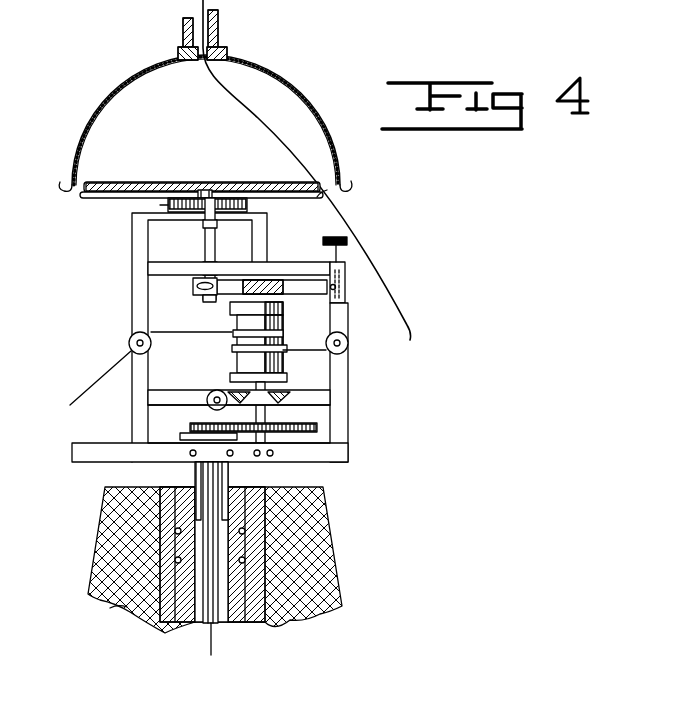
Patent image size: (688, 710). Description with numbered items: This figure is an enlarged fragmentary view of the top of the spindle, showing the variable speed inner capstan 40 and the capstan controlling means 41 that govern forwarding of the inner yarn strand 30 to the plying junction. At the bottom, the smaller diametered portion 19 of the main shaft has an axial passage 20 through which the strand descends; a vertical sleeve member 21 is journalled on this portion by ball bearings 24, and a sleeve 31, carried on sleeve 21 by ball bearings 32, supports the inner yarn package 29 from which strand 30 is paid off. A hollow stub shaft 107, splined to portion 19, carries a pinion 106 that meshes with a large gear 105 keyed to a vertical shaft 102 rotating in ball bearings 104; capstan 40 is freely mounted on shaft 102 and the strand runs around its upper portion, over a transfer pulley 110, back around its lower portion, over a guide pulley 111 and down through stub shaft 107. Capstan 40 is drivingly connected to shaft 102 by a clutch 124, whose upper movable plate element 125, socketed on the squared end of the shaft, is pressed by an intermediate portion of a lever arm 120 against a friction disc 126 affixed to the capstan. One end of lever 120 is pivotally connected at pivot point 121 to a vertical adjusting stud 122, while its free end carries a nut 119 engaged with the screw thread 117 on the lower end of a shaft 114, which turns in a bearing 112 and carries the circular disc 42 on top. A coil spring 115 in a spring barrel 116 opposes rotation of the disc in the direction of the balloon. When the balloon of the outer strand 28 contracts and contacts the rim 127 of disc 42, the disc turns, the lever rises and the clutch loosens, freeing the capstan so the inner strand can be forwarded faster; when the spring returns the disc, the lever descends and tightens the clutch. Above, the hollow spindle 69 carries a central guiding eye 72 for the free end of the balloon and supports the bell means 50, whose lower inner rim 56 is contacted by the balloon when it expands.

The hollow spindle 69 is at (218, 25).
The central guiding eye 72 is at (191, 63).
The bell means 50 is at (113, 88).
The outer strand 28 is at (277, 123).
The circular disc 42 is at (137, 182).
The lower inner rim 56 is at (352, 189).
The spring barrel 116 is at (170, 197).
The coil spring 115 is at (247, 202).
The rim 127 is at (323, 192).
The vertical adjusting stud 122 is at (346, 240).
The pivot point 121 is at (348, 262).
The shaft 114 is at (208, 242).
The bearing 112 is at (215, 258).
The upper movable plate element 125 is at (275, 286).
The nut 119 is at (193, 287).
The lever arm 120 is at (313, 297).
The screw thread 117 is at (230, 310).
The clutch 124 is at (290, 310).
The friction disc 126 is at (230, 330).
The transfer pulley 110 is at (348, 343).
The guide pulley 111 is at (216, 390).
The inner capstan 40 is at (305, 370).
The ball bearings 104 is at (303, 400).
The shaft 102 is at (273, 417).
The large gear 105 is at (320, 428).
The pinion 106 is at (190, 433).
The capstan controlling means 41 is at (113, 233).
The vertical sleeve member 21 is at (183, 485).
The hollow stub shaft 107 is at (230, 480).
The ball bearings 24 is at (160, 545).
The sleeve 31 is at (175, 560).
The inner yarn package 29 is at (342, 558).
The ball bearings 32 is at (127, 607).
The smaller diametered portion 19 is at (200, 627).
The axial passage 20 is at (216, 617).
The yarn strand 30 is at (211, 652).